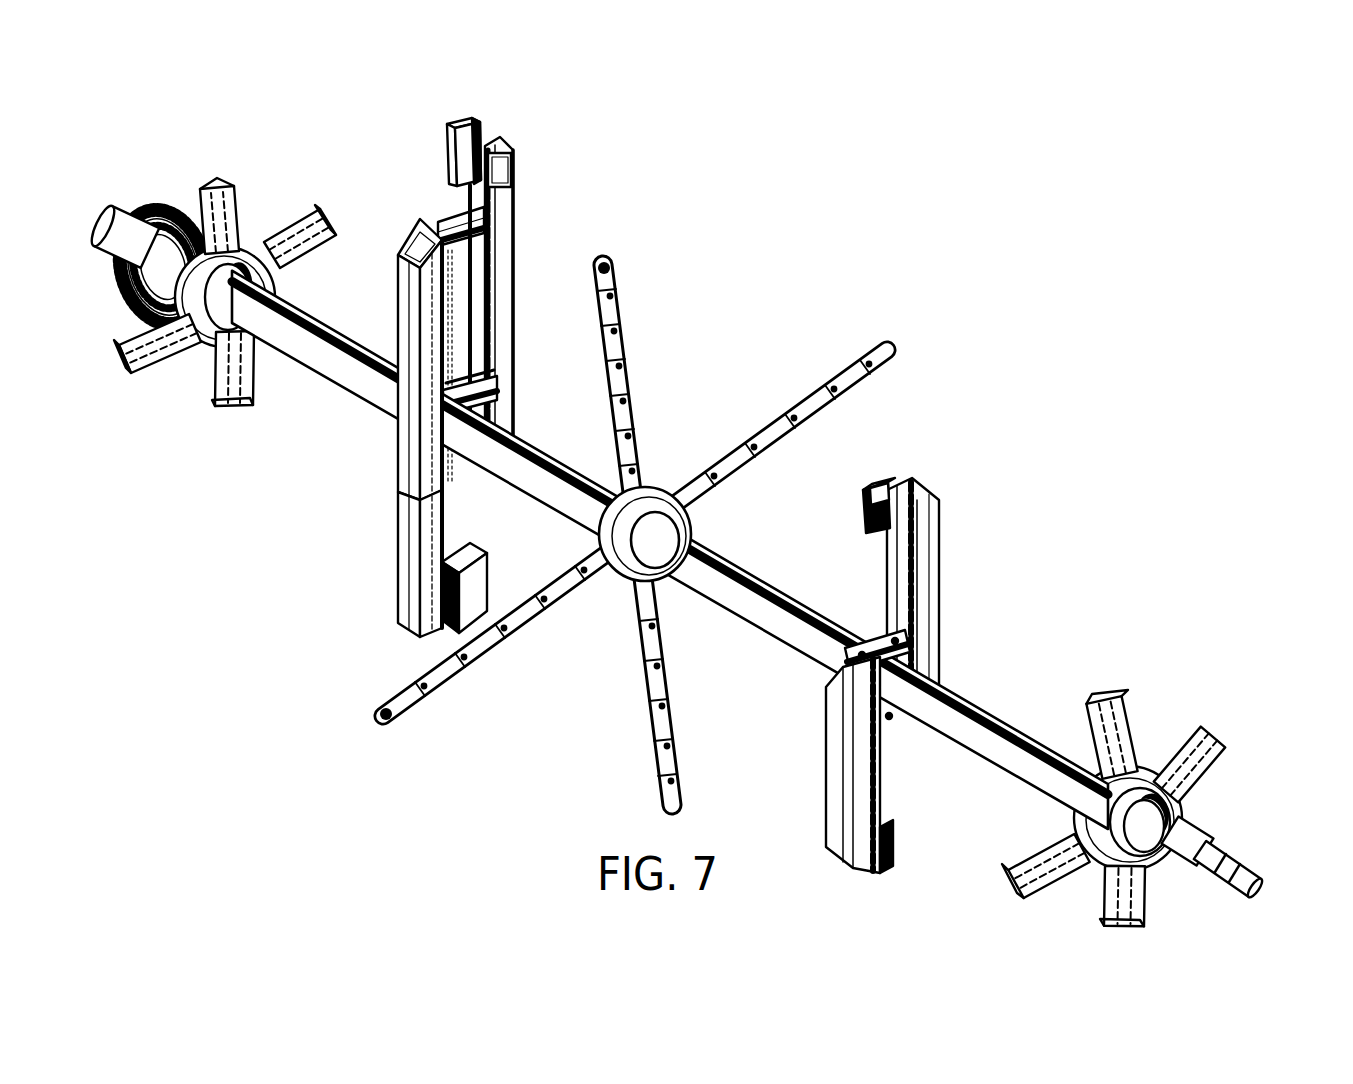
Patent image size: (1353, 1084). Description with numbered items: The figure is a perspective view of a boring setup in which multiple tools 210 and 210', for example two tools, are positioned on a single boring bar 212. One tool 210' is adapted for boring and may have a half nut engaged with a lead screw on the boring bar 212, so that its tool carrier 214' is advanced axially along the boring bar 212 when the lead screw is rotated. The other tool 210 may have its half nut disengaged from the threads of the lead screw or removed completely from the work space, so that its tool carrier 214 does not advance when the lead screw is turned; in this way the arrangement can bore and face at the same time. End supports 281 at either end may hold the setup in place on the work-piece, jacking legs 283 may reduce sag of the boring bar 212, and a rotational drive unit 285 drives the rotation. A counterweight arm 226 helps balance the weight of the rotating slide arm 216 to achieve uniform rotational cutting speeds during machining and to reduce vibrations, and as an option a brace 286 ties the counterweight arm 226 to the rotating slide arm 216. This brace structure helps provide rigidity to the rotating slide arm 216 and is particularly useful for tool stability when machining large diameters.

The tool 210 is at (601, 285).
The tool 210' is at (1005, 559).
The boring bar 212 is at (981, 731).
The tool carrier 214 is at (490, 455).
The tool carrier 214' is at (903, 713).
The rotating slide arm 216 is at (509, 233).
The counterweight arm 226 is at (400, 587).
The end supports 281 is at (327, 211).
The jacking legs 283 is at (888, 363).
The rotational drive unit 285 is at (167, 204).
The brace 286 is at (407, 307).